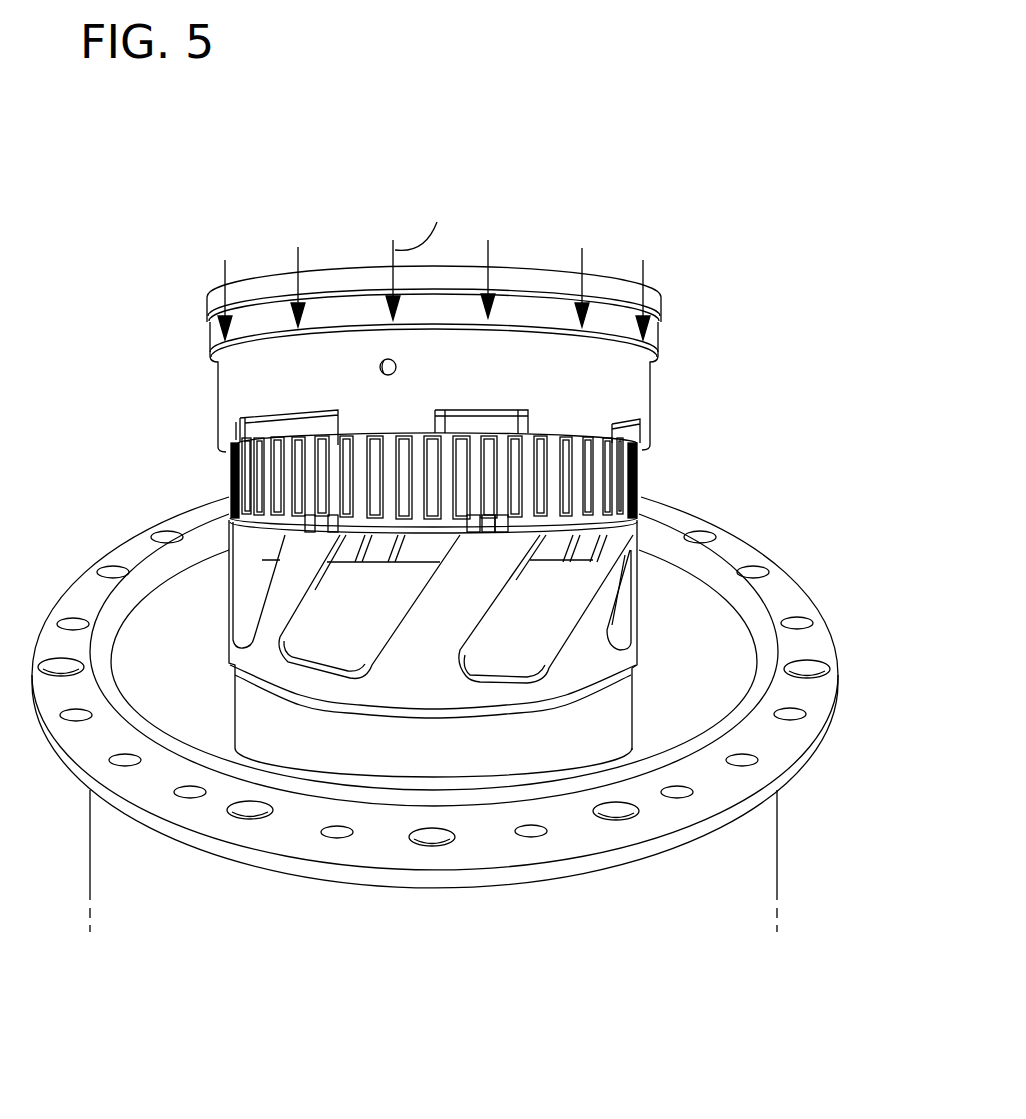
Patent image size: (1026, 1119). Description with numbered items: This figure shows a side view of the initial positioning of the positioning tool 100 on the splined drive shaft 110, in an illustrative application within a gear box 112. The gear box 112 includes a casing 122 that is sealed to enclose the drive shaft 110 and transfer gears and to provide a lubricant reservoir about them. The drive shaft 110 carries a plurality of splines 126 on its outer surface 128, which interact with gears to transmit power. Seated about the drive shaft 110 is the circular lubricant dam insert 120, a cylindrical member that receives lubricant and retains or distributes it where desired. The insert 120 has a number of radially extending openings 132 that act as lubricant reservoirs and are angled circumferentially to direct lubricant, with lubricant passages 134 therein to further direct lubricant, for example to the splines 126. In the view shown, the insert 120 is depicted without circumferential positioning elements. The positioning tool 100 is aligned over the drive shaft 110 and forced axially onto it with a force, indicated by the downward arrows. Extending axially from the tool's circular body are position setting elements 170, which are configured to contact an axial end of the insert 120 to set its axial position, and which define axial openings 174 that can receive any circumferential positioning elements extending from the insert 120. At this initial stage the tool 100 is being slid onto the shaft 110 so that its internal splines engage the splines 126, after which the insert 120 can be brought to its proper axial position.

The positioning tool 100 is at (667, 295).
The splined drive shaft 110 is at (636, 716).
The gear box 112 is at (805, 703).
The circular lubricant dam insert 120 is at (623, 662).
The casing 122 is at (800, 613).
The splines 126 is at (603, 472).
The outer surface 128 is at (557, 598).
The radially extending openings 132 is at (400, 533).
The lubricant passages 134 is at (255, 548).
The position setting element 170 is at (578, 425).
The axial opening 174 is at (242, 425).